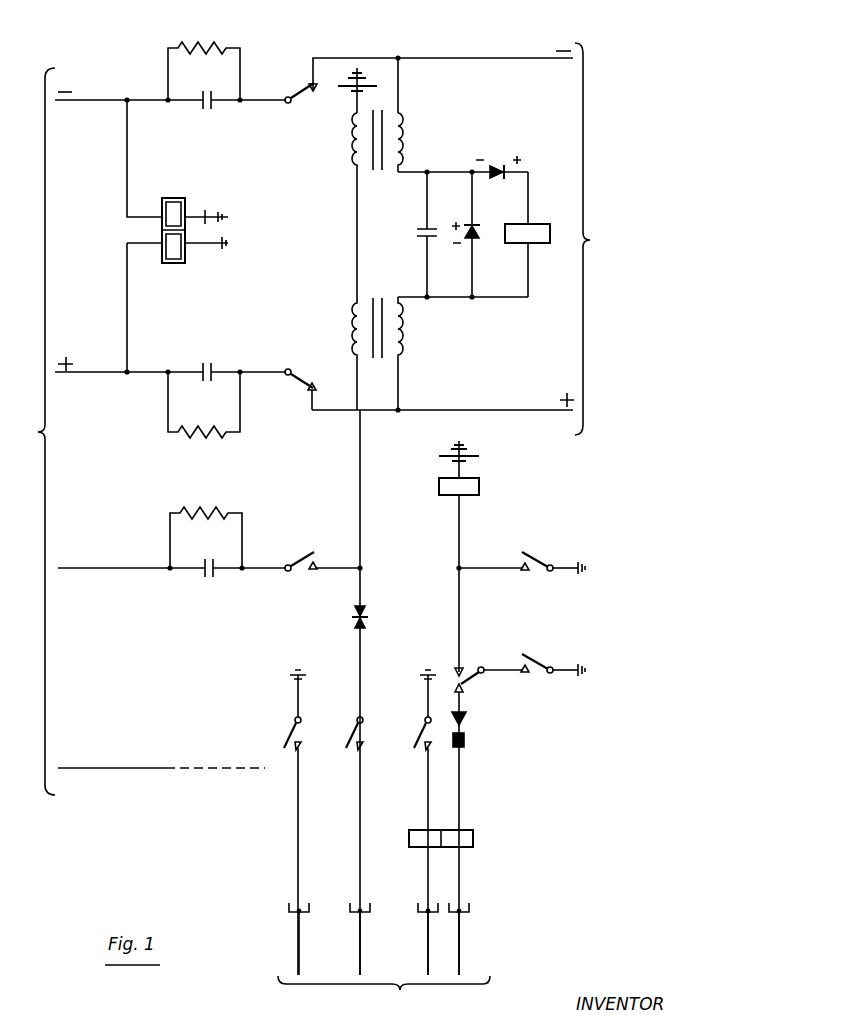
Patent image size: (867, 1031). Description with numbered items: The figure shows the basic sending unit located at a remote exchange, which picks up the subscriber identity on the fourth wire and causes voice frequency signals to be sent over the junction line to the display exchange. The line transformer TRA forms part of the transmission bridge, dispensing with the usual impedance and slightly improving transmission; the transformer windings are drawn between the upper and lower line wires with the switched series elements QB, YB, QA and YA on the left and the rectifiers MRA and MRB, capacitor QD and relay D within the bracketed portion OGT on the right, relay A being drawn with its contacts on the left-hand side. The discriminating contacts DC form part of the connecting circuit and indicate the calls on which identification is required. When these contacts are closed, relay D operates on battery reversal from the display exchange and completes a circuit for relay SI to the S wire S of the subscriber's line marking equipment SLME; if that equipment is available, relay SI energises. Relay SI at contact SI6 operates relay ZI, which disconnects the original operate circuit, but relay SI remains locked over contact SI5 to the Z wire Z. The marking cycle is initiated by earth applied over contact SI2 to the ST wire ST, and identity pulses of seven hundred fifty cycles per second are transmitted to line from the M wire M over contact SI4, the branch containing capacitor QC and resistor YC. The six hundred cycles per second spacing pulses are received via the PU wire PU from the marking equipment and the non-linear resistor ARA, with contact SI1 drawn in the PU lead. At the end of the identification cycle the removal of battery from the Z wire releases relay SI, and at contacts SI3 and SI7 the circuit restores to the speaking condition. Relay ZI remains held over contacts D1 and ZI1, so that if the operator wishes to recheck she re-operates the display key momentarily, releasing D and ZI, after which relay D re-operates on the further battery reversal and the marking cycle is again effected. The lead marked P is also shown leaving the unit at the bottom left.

The resistor YB is at (204, 62).
The capacitor QB is at (204, 90).
The contact SI7 of relay SI SI7 is at (421, 80).
The oscillator/transformer unit OGT is at (602, 239).
The line transformer TRA is at (370, 234).
The rectifier MRA is at (498, 159).
The capacitor QD is at (412, 234).
The rectifier MRB is at (458, 234).
The relay D is at (570, 246).
The relay A is at (183, 288).
The capacitor QA is at (204, 361).
The resistor YA is at (204, 419).
The contact SI3 of relay SI SI3 is at (307, 388).
The M wire M is at (171, 559).
The resistor YC is at (206, 527).
The capacitor QC is at (206, 558).
The contact SI4 of relay SI SI4 is at (315, 556).
The non-linear resistor ARA is at (341, 692).
The switch contact SI1 is at (341, 733).
The contact SI2 of relay SI SI2 is at (280, 822).
The contact SI5 of relay SI SI5 is at (413, 822).
The relay ZI is at (506, 491).
The contact SI6 of relay SI SI6 is at (522, 557).
The contact ZI1 of relay ZI ZI1 is at (480, 689).
The contact D1 of relay D D1 is at (534, 660).
The discriminating contacts DC is at (473, 843).
The relay SI is at (504, 843).
The ST wire ST is at (307, 941).
The PU wire PU is at (369, 941).
The Z wire Z is at (431, 941).
The S wire S is at (462, 941).
The subscriber's line marking equipment SLME is at (384, 992).
The line P is at (161, 755).